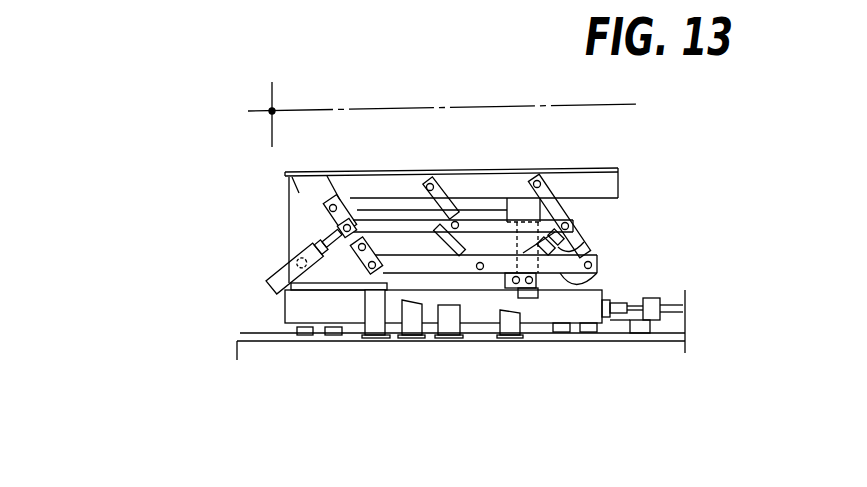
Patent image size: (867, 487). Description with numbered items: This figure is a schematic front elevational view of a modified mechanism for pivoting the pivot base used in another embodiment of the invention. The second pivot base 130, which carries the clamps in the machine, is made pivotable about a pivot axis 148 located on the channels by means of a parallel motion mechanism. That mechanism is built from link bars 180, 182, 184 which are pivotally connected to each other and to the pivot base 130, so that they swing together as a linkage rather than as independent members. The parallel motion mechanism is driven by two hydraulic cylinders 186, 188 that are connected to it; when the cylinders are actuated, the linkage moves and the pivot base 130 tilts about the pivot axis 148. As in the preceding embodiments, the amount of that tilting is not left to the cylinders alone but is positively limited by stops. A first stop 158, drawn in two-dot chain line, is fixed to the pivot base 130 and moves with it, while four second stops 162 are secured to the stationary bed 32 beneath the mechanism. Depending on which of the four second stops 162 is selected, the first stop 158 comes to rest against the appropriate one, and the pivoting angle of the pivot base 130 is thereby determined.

The bed 32 is at (637, 375).
The second pivot base 130 is at (608, 182).
The pivot axis 148 is at (272, 111).
The first stop 158 is at (530, 298).
The second stops 162 is at (375, 324).
The link bar 180 is at (443, 197).
The link bar 182 is at (490, 222).
The link bar 184 is at (351, 203).
The hydraulic cylinder 186 is at (560, 246).
The hydraulic cylinder 188 is at (278, 274).